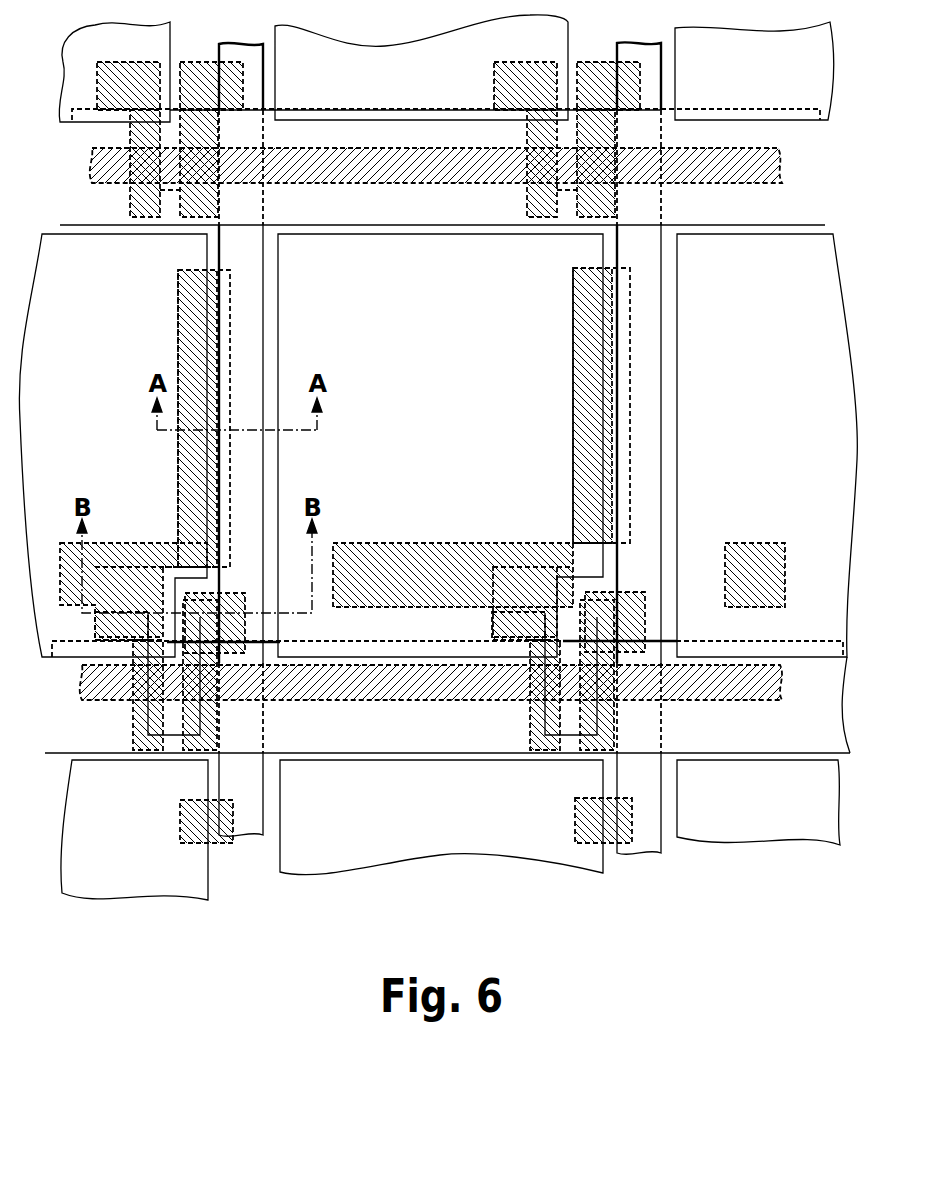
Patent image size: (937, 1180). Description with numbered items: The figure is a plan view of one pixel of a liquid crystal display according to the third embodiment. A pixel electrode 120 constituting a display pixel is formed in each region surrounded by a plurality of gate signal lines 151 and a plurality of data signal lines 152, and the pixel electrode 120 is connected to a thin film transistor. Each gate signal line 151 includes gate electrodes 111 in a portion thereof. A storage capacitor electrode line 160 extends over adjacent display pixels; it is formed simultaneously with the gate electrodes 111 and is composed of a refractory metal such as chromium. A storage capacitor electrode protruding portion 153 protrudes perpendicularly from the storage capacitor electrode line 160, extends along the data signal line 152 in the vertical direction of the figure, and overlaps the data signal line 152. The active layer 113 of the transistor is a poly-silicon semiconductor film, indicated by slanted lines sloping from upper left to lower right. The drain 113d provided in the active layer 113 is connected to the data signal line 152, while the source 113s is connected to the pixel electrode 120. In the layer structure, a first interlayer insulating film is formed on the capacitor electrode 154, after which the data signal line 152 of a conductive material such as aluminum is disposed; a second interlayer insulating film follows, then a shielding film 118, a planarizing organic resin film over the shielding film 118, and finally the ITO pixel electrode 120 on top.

The gate electrode 111 is at (122, 692).
The active layer 113 is at (155, 707).
The source 113s is at (520, 605).
The drain 113d is at (633, 620).
The shielding film 118 is at (372, 208).
The pixel electrode 120 is at (585, 250).
The gate signal line 151 is at (782, 673).
The data signal line 152 is at (250, 340).
The storage capacitor electrode protruding portion 153 is at (227, 295).
The capacitor electrode 154 is at (573, 300).
The storage capacitor electrode line 160 is at (573, 372).